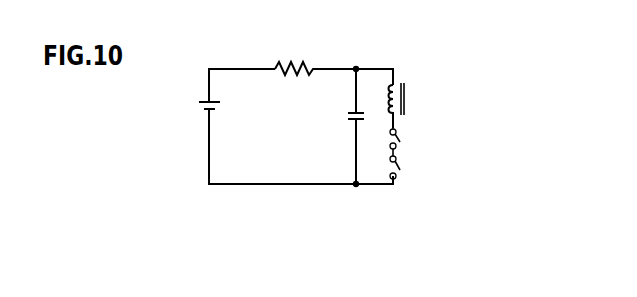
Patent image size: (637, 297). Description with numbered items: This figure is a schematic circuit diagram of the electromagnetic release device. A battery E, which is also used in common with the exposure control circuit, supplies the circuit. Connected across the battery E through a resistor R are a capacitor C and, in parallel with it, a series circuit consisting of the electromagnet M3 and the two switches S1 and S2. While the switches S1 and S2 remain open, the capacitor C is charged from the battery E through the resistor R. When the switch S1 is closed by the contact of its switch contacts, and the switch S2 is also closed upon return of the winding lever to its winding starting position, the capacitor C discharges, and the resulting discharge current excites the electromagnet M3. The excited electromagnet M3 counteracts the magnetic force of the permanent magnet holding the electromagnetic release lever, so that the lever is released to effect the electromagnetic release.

The battery E is at (197, 107).
The resistor R is at (297, 63).
The capacitor C is at (346, 116).
The electromagnet M3 is at (403, 91).
The switch S1 is at (399, 142).
The switch S2 is at (400, 170).